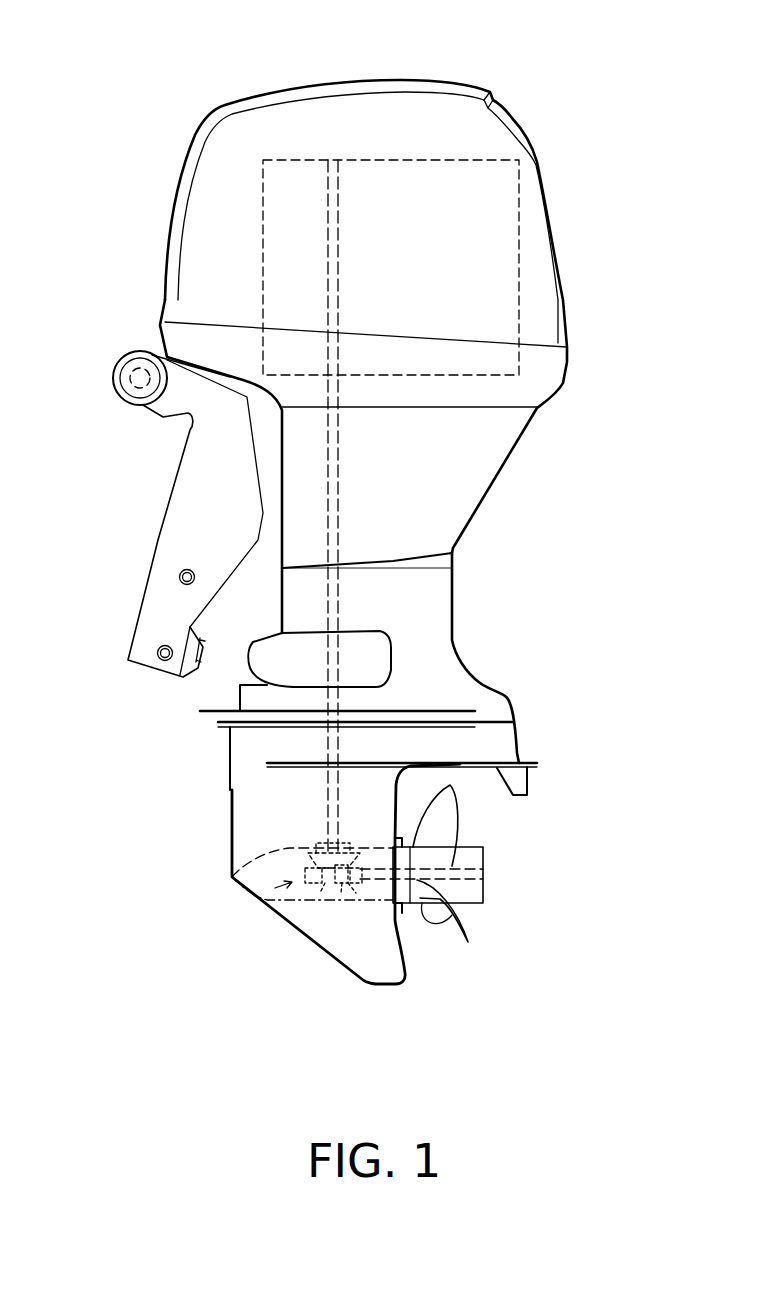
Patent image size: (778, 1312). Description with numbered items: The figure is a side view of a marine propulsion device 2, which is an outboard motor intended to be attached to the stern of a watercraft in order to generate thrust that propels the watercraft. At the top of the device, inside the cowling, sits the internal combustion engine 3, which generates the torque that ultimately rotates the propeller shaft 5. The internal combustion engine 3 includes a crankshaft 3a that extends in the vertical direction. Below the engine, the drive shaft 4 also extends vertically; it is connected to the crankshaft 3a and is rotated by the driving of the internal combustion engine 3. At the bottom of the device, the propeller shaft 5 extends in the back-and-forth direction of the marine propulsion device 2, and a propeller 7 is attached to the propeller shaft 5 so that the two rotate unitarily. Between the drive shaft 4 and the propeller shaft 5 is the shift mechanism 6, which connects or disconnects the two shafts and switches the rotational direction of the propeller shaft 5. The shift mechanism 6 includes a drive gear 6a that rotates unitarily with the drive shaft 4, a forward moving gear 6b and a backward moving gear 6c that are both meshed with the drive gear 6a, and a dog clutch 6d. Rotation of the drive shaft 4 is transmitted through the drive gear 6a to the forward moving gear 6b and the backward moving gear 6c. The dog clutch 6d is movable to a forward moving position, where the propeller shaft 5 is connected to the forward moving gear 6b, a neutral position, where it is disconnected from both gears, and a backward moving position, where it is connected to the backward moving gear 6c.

The marine propulsion device 2 is at (163, 134).
The internal combustion engine 3 is at (290, 158).
The crankshaft 3a is at (340, 243).
The drive shaft 4 is at (340, 495).
The propeller shaft 5 is at (408, 958).
The shift mechanism 6 is at (294, 928).
The drive gear 6a is at (316, 842).
The forward moving gear 6b is at (313, 888).
The backward moving gear 6c is at (358, 890).
The dog clutch 6d is at (343, 895).
The propeller 7 is at (433, 897).